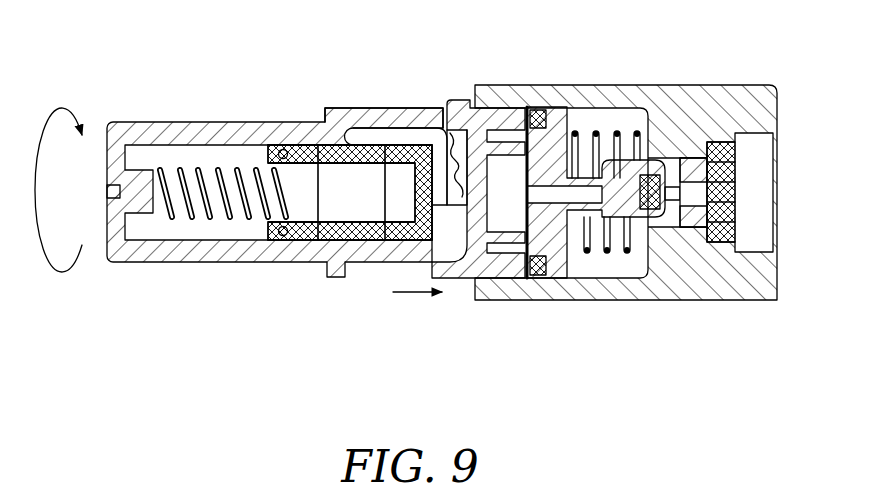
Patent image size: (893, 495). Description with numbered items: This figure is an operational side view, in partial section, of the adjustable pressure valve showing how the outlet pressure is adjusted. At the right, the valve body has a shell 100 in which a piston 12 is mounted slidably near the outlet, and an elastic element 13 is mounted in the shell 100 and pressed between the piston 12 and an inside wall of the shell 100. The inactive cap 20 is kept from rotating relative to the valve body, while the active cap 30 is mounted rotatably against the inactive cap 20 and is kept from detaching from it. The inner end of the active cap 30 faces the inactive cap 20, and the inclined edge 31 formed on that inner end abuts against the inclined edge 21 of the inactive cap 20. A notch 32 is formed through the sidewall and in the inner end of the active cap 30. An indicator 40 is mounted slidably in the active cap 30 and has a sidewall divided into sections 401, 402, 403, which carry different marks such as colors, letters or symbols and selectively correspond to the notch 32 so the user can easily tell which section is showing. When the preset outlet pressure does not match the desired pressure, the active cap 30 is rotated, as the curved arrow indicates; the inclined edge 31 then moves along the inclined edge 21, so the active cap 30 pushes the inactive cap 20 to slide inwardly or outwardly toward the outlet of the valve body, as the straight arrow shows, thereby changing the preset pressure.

The active cap 30 is at (171, 119).
The notch 32 is at (338, 108).
The inclined edge 31 is at (390, 126).
The indicator 40 is at (270, 350).
The section 401 is at (392, 263).
The section 402 is at (352, 263).
The section 403 is at (295, 263).
The inactive cap 20 is at (467, 281).
The inclined edge 21 is at (468, 127).
The piston 12 is at (553, 117).
The elastic element 13 is at (617, 120).
The shell 100 is at (710, 89).